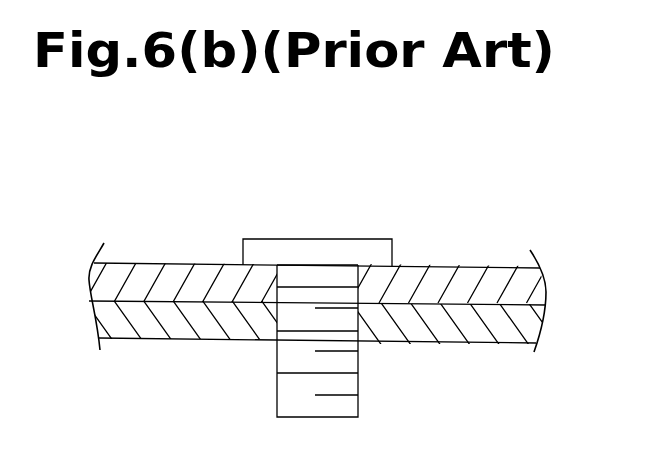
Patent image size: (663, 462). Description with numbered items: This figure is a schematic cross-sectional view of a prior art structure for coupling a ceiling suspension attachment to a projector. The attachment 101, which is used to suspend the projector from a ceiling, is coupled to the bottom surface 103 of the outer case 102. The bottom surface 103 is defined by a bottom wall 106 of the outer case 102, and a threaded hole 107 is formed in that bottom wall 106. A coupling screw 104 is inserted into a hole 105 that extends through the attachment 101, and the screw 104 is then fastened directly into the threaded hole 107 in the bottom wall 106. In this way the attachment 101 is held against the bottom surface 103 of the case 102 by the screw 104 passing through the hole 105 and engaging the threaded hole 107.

The attachment 101 is at (540, 280).
The outer case 102 is at (486, 300).
The bottom surface 103 is at (459, 268).
The coupling screw 104 is at (267, 239).
The hole 105 is at (345, 266).
The bottom wall 106 is at (530, 321).
The threaded hole 107 is at (357, 338).